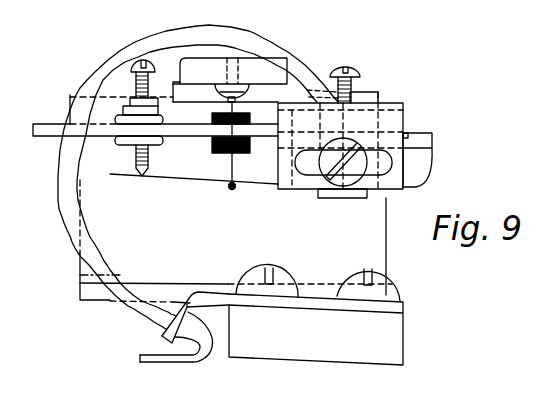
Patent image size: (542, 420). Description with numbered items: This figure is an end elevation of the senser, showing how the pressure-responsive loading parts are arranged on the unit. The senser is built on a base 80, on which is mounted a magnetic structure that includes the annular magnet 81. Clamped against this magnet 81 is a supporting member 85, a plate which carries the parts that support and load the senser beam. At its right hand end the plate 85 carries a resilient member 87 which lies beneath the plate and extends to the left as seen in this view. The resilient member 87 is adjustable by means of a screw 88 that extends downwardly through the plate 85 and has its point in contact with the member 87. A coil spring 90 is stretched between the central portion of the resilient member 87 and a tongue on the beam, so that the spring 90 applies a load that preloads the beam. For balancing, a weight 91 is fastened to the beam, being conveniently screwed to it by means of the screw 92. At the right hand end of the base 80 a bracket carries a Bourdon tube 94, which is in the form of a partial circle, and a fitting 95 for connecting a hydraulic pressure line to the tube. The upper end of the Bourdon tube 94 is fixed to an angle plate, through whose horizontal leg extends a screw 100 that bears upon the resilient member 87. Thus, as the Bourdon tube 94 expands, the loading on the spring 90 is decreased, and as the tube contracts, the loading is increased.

The base 80 is at (404, 320).
The annular magnet 81 is at (80, 301).
The supporting member 85 is at (135, 137).
The resilient member 87 is at (433, 158).
The screw 88 is at (136, 70).
The coil spring 90 is at (212, 152).
The weight 91 is at (207, 68).
The screw 92 is at (260, 90).
The Bourdon tube 94 is at (95, 246).
The fitting 95 is at (140, 356).
The screw 100 is at (360, 74).